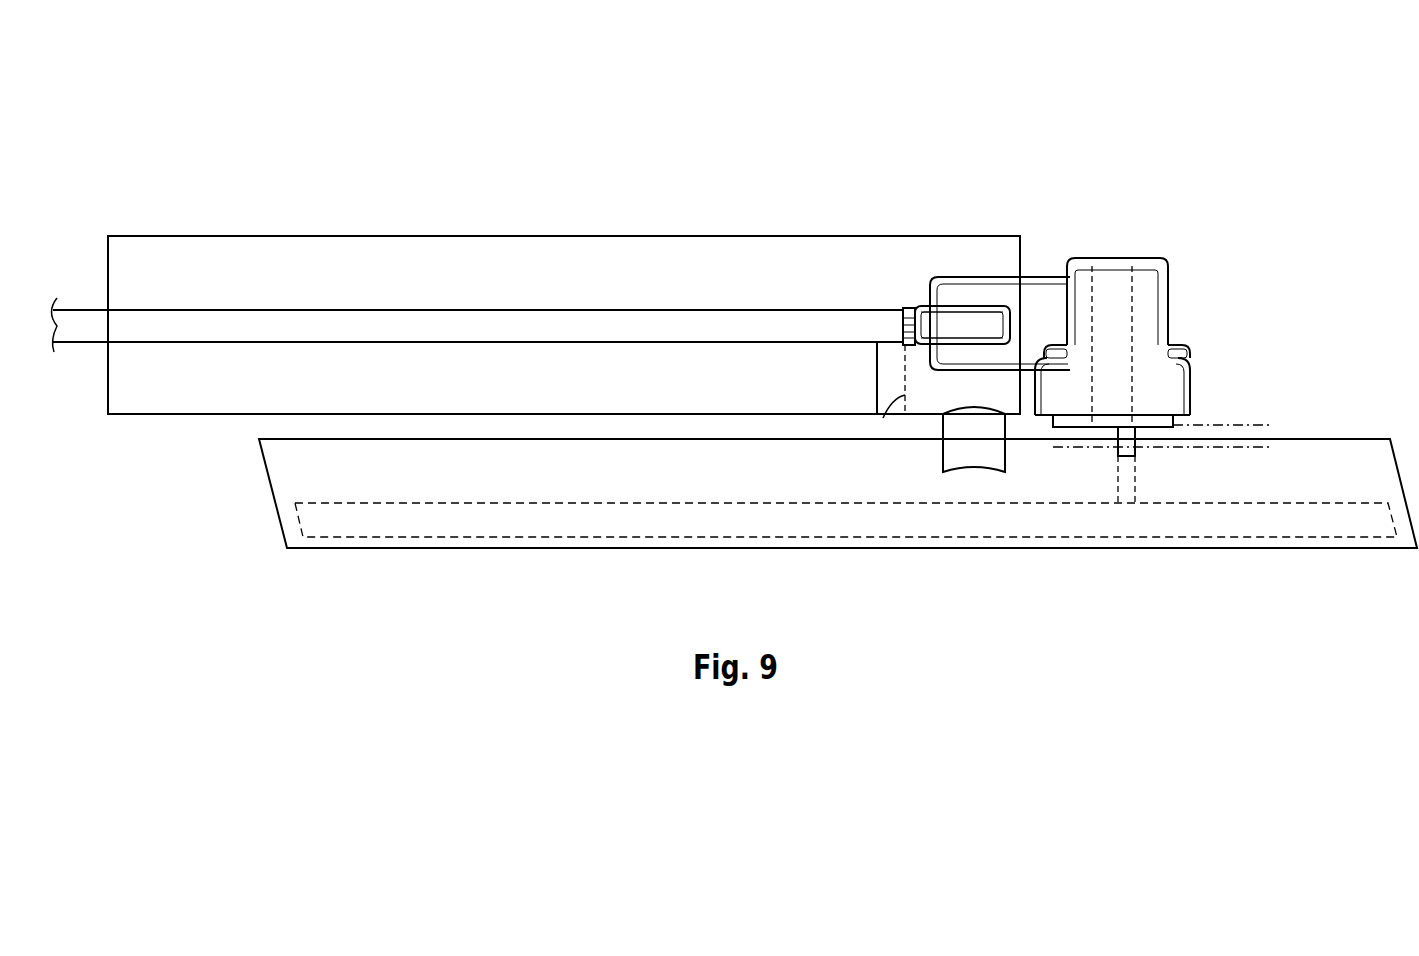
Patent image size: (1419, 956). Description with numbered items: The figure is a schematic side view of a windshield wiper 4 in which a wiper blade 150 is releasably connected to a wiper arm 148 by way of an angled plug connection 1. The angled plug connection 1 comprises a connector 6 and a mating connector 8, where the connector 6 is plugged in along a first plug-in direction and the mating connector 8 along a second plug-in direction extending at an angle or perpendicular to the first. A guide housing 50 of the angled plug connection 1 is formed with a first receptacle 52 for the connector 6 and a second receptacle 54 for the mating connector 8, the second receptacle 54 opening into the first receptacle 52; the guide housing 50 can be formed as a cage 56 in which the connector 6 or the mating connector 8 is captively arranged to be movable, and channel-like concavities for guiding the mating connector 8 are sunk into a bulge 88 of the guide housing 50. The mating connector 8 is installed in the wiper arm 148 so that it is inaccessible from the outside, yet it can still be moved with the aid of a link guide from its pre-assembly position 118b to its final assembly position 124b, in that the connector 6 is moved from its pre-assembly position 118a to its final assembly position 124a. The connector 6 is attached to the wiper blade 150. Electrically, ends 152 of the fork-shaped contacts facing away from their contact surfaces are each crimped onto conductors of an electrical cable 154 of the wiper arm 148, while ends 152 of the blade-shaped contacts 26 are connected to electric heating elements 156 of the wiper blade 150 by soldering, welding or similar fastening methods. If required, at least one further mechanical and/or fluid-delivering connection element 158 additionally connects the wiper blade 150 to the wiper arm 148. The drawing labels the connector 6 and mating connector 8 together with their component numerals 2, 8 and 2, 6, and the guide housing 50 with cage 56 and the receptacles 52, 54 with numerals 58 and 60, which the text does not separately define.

The angled plug connection 1 is at (1200, 234).
The windshield wiper 4 is at (1277, 104).
The component 2 is at (993, 399).
The mating connector 8 is at (912, 306).
The connector 6 is at (1077, 432).
The blade-shaped contact 26 is at (1114, 430).
The guide housing 50 is at (1117, 316).
The cage 56 is at (1112, 270).
The first receptacle 52 is at (1160, 378).
The base body 58 is at (1183, 368).
The second receptacle 54 is at (1000, 278).
The clamping body 60 is at (988, 285).
The bulge 88 is at (968, 322).
The pre-assembly position of connector 118a is at (1236, 450).
The pre-assembly position of mating connector 118b is at (875, 385).
The final assembly position of connector 124a is at (1240, 420).
The final assembly position of mating connector 124b is at (883, 418).
The wiper arm 148 is at (462, 236).
The wiper blade 150 is at (1360, 452).
The ends of contacts 152 is at (1137, 453).
The electrical cable 154 is at (313, 310).
The electric heating elements 156 is at (567, 530).
The connection element 158 is at (980, 450).